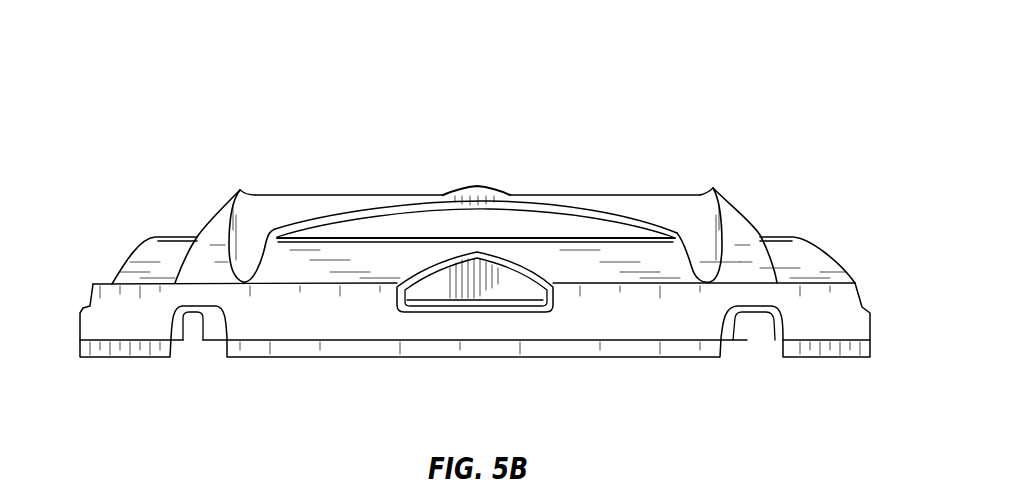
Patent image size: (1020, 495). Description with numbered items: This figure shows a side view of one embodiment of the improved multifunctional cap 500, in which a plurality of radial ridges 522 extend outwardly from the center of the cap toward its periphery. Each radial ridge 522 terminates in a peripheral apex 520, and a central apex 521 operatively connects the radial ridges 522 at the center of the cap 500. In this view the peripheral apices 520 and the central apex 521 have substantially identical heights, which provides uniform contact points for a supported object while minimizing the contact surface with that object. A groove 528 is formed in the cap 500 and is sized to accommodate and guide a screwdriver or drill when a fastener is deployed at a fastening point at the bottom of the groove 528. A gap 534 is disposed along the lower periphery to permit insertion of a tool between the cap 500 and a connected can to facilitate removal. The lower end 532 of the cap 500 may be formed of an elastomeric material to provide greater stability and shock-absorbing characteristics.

The improved multifunctional cap 500 is at (149, 130).
The peripheral apex 520 is at (240, 190).
The central apex 521 is at (475, 187).
The radial ridge 522 is at (318, 195).
The groove 528 is at (460, 278).
The lower end 532 is at (530, 358).
The gap 534 is at (190, 333).